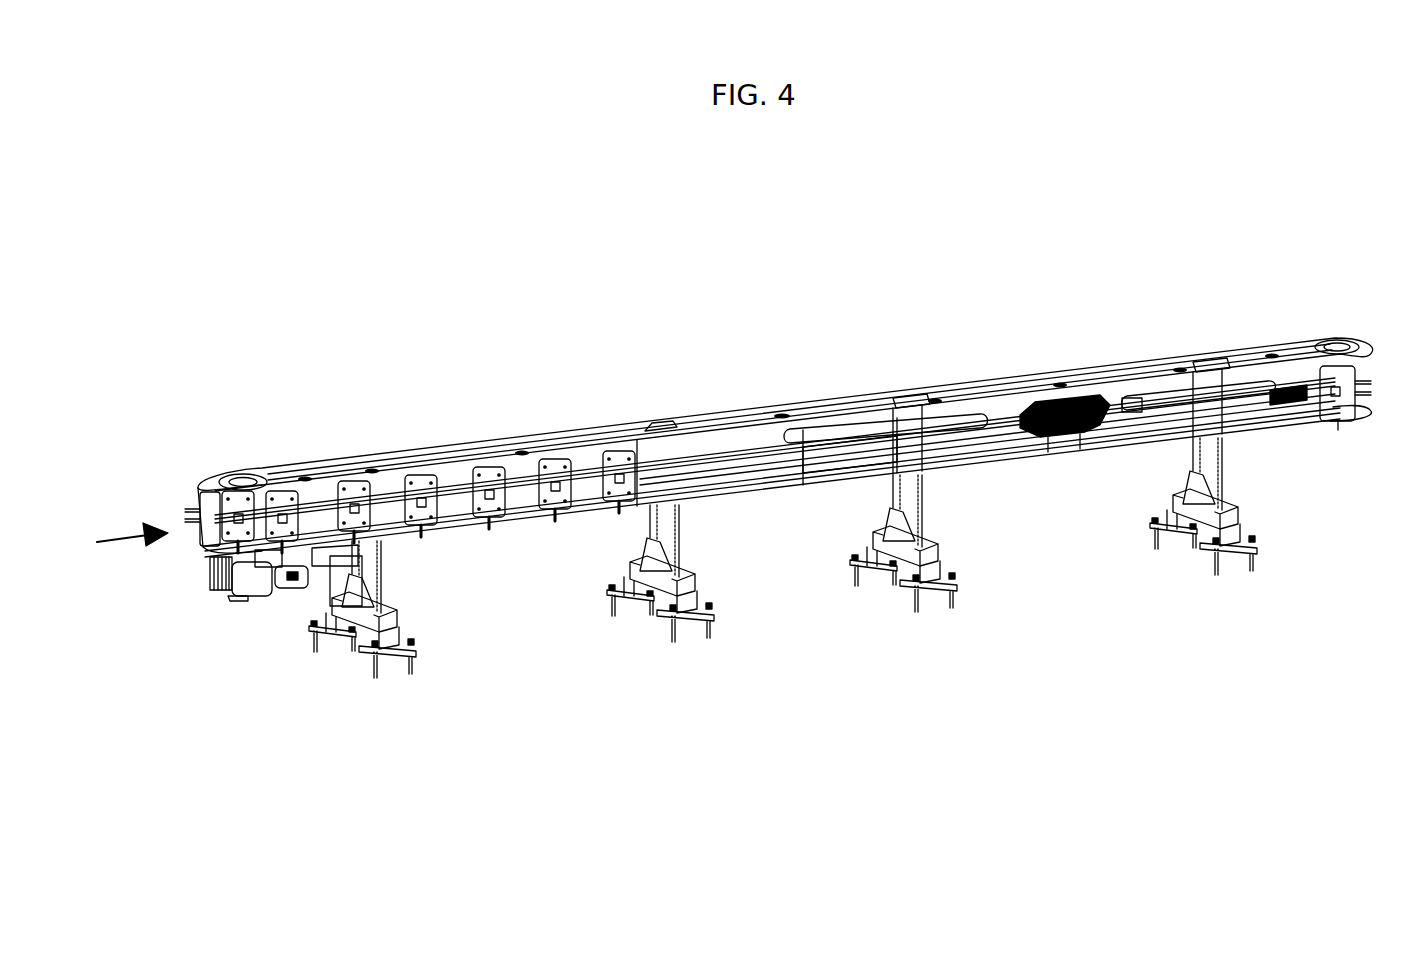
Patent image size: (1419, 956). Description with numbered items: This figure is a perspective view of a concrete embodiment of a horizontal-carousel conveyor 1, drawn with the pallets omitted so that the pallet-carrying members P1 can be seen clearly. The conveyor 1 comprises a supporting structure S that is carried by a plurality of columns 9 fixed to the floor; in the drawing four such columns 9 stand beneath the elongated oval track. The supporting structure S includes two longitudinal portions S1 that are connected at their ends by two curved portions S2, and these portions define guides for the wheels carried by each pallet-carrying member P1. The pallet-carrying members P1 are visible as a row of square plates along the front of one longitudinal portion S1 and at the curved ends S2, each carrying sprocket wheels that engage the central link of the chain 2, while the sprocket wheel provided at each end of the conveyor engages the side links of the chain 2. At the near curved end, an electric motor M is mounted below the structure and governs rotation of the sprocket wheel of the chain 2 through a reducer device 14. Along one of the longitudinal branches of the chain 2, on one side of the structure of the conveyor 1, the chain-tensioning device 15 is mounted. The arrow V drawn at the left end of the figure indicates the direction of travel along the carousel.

The conveyor 1 is at (801, 429).
The chain 2 is at (764, 495).
The columns 9 is at (388, 581).
The reducer device 14 is at (245, 580).
The chain-tensioning device 15 is at (1117, 422).
The electric motor M is at (293, 582).
The pallet-carrying members P1 is at (1336, 420).
The supporting structure S is at (1299, 328).
The longitudinal portions S1 is at (996, 440).
The curved portions S2 is at (191, 487).
The direction of movement V is at (132, 529).